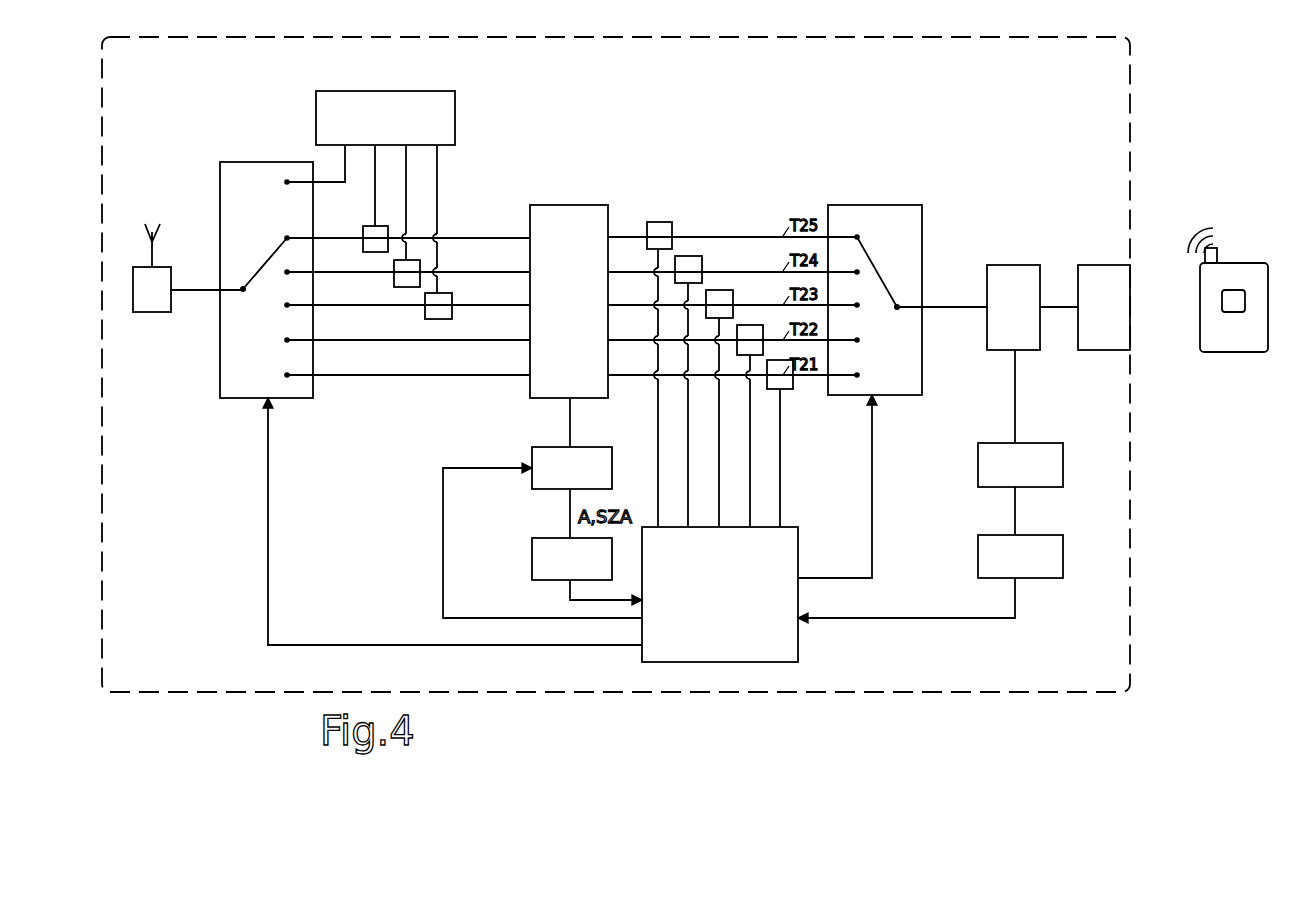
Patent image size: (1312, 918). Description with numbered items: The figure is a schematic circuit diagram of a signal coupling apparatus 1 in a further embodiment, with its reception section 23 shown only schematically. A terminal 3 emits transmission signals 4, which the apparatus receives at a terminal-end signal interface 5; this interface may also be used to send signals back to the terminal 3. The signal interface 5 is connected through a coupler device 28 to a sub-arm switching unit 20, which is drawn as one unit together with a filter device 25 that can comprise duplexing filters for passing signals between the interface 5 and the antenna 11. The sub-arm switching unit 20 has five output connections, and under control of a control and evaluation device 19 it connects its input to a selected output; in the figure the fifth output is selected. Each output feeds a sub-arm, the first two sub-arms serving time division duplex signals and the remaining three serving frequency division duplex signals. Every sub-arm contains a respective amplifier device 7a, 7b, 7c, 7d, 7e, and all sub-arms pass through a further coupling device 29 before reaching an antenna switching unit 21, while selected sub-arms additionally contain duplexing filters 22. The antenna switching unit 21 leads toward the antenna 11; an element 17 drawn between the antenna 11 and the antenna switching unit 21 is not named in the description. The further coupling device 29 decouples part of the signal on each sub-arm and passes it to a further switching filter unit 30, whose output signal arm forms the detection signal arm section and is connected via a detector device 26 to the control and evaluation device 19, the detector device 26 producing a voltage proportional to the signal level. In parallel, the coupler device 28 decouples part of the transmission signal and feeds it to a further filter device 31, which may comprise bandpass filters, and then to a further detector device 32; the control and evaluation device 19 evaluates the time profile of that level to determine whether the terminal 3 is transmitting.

The signal coupling apparatus 1 is at (593, 37).
The terminal 3 is at (1262, 263).
The transmission signals 4 is at (1215, 258).
The terminal-end signal interface 5 is at (1100, 352).
The amplifier device 7a is at (782, 391).
The amplifier device 7b is at (752, 357).
The amplifier device 7c is at (733, 290).
The amplifier device 7d is at (702, 257).
The amplifier device 7e is at (672, 223).
The antenna 11 is at (160, 257).
The receiver 17 is at (150, 313).
The control and evaluation device 19 is at (800, 562).
The sub-arm switching unit 20 is at (907, 273).
The antenna switching unit 21 is at (245, 160).
The duplexing filters 22 is at (363, 232).
The reception section 23 is at (430, 90).
The filter device 25 is at (880, 205).
The detector device 26 is at (532, 557).
The coupler device 28 is at (1020, 263).
The further coupling device 29 is at (578, 205).
The further switching filter unit 30 is at (532, 447).
The further filter device 31 is at (1063, 467).
The further detector device 32 is at (1063, 558).